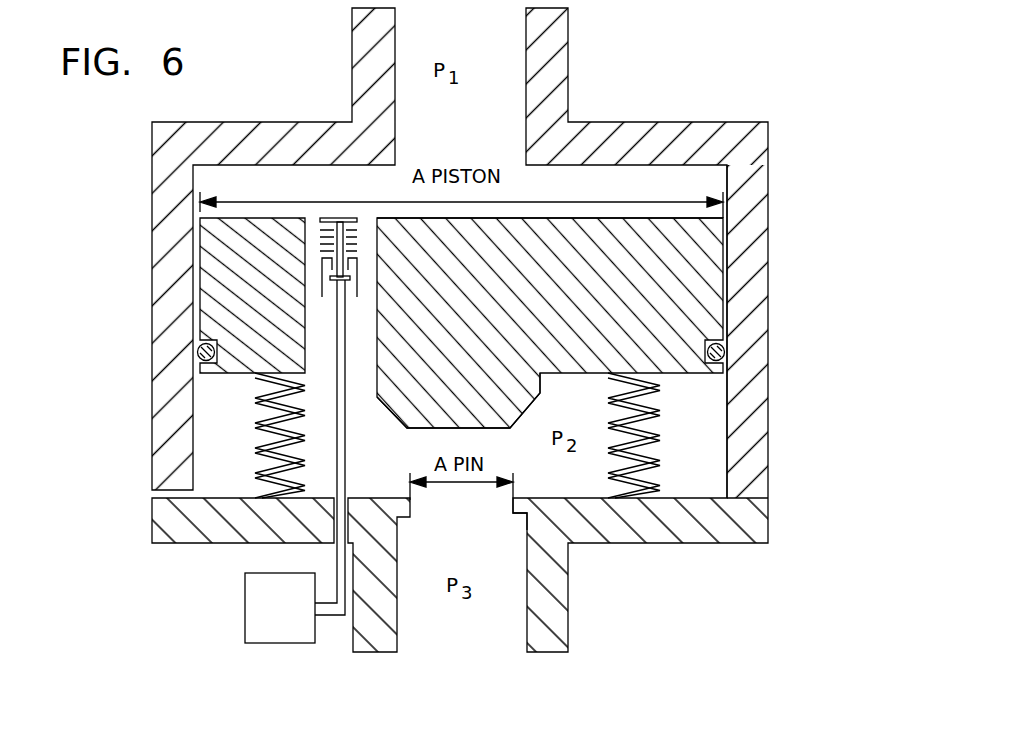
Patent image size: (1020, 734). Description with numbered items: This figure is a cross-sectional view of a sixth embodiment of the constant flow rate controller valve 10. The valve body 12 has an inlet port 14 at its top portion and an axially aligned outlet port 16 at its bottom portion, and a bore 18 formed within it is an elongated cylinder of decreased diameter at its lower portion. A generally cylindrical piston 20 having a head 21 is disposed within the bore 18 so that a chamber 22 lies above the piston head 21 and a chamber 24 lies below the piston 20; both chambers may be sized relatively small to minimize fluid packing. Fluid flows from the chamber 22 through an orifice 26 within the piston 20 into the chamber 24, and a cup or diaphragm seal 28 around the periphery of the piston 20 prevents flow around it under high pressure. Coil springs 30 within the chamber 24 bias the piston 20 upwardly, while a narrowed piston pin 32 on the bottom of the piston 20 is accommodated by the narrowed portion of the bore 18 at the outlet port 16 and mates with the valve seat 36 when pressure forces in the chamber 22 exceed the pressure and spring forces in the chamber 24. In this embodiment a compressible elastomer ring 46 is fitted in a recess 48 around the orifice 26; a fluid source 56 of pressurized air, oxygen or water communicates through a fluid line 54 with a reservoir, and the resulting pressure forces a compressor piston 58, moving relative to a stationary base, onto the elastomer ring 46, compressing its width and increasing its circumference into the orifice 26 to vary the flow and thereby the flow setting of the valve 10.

The constant flow rate controller valve 10 is at (650, 52).
The valve body 12 is at (569, 120).
The inlet port 14 is at (505, 43).
The outlet port 16 is at (500, 631).
The bore 18 is at (723, 290).
The piston 20 is at (697, 250).
The piston head 21 is at (627, 218).
The chamber 22 is at (693, 180).
The chamber 24 is at (702, 437).
The orifice 26 is at (315, 325).
The seal 28 is at (723, 355).
The springs 30 is at (255, 433).
The piston pin 32 is at (514, 426).
The valve seat 36 is at (513, 517).
The elastomer ring 46 is at (328, 240).
The recess 48 is at (310, 257).
The fluid line 54 is at (343, 465).
The fluid source 56 is at (245, 588).
The piston 58 is at (318, 218).